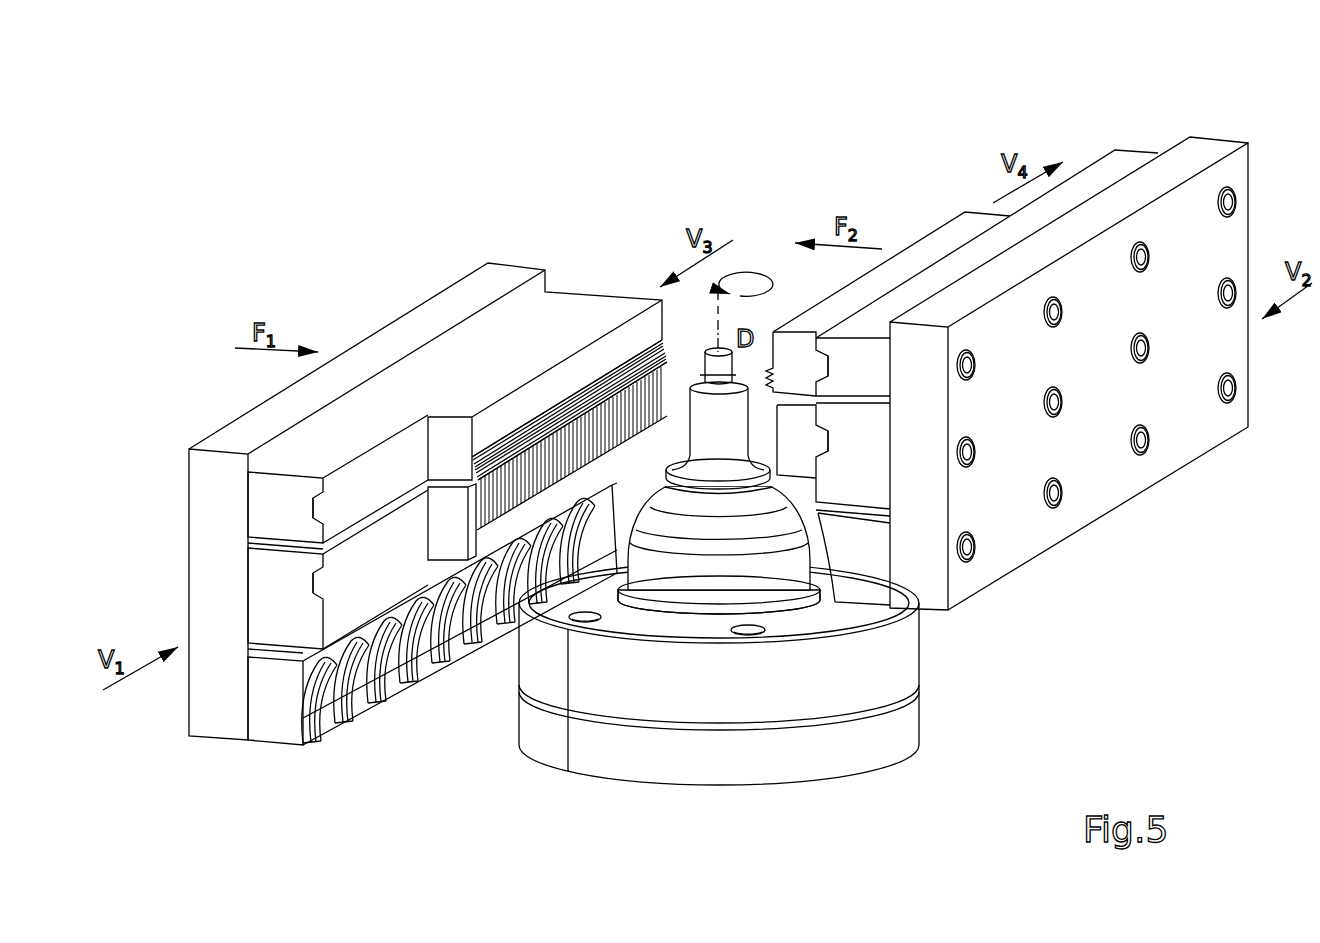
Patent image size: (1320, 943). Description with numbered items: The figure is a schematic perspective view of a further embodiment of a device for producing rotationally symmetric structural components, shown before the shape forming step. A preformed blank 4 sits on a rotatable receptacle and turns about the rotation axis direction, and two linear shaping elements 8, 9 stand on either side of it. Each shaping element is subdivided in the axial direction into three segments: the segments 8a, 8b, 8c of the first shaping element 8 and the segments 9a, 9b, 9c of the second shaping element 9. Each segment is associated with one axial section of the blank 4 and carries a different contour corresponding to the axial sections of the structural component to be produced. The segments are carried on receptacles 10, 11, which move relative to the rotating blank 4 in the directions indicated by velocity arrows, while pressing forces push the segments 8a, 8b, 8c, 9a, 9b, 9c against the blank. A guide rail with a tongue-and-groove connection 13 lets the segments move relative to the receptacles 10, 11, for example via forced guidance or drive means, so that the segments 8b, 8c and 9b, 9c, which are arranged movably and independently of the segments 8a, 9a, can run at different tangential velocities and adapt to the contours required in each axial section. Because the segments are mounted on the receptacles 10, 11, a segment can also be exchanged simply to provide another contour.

The blank 4 is at (695, 560).
The linear shaping element 8 is at (590, 265).
The segment 8a is at (432, 614).
The segment 8b is at (362, 566).
The segment 8c is at (457, 421).
The linear shaping element 9 is at (1135, 120).
The segment 9a is at (854, 559).
The segment 9b is at (833, 460).
The segment 9c is at (828, 367).
The receptacle 10 is at (218, 713).
The receptacle 11 is at (1018, 545).
The tongue-and-groove connection 13 is at (312, 510).